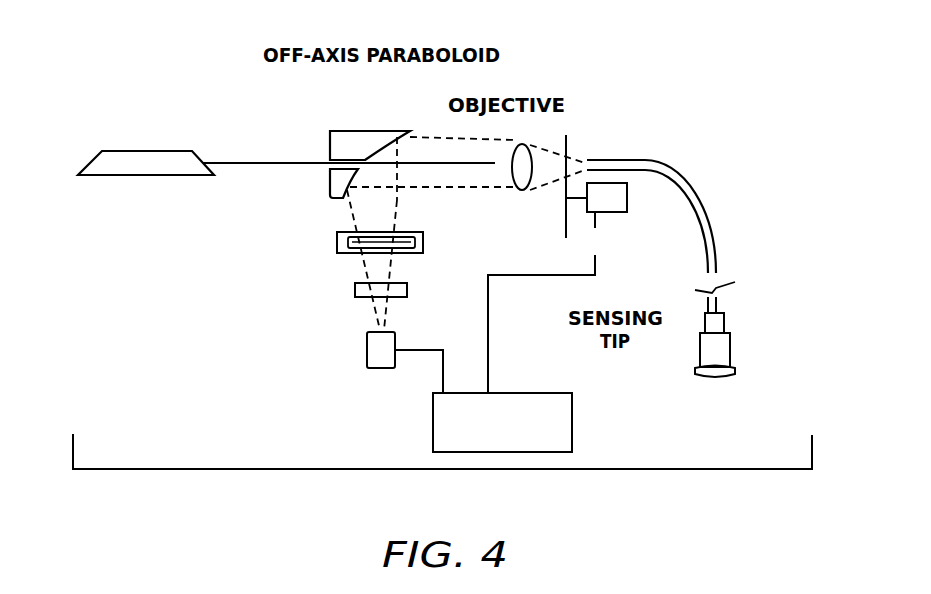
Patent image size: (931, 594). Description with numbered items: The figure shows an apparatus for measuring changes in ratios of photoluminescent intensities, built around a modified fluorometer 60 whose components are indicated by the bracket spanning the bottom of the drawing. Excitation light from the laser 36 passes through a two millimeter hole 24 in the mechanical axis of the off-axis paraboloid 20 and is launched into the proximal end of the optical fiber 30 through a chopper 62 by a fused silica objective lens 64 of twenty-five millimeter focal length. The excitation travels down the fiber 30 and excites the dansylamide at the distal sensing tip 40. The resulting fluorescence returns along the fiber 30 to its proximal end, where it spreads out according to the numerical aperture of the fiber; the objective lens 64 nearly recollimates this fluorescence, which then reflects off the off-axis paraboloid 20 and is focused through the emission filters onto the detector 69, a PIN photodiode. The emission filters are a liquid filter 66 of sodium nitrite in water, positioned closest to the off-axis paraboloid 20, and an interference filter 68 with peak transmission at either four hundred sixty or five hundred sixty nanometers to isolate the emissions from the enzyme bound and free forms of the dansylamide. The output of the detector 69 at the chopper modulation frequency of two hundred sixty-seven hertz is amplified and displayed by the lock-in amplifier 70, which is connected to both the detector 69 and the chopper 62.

The off-axis paraboloid 20 is at (378, 130).
The hole 24 is at (330, 158).
The fiber 30 is at (707, 212).
The laser 36 is at (141, 176).
The sensing tip 40 is at (728, 378).
The fluorometer 60 is at (440, 470).
The chopper 62 is at (628, 199).
The objective lens 64 is at (564, 138).
The liquid filter 66 is at (423, 242).
The interference filter 68 is at (407, 290).
The detector 69 is at (396, 338).
The lock-in amplifier 70 is at (528, 393).